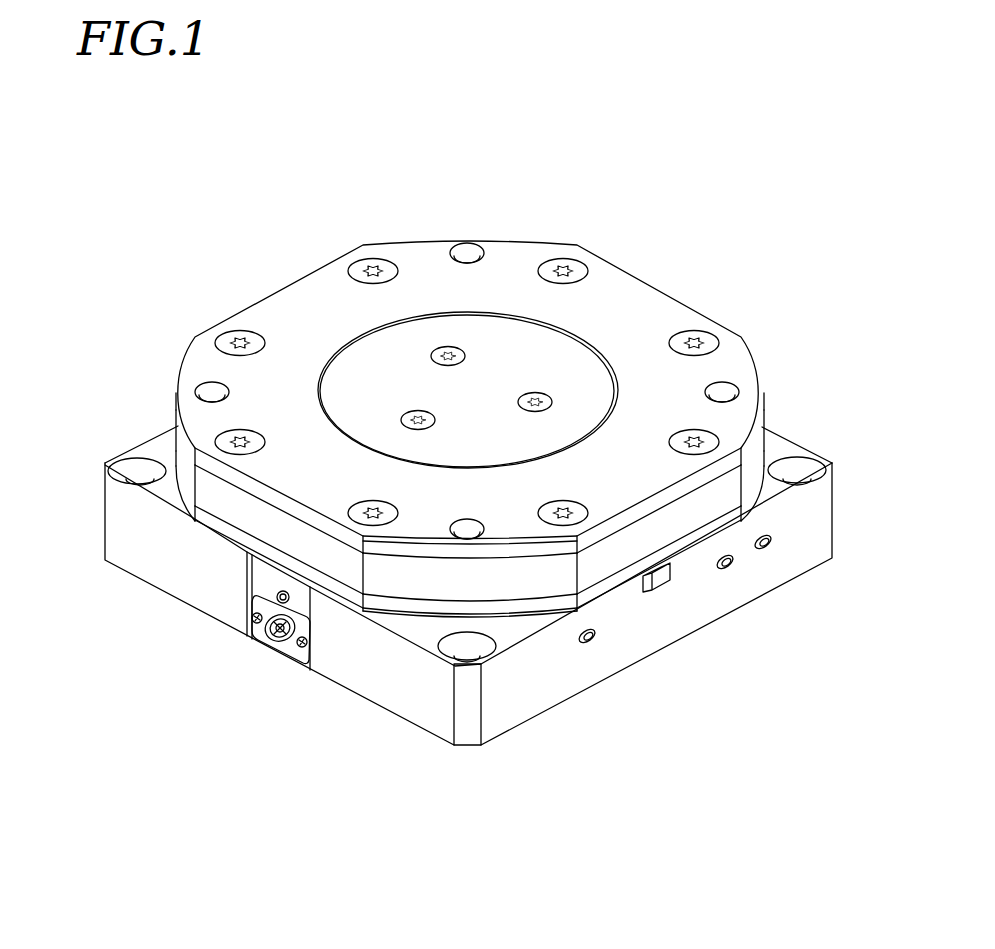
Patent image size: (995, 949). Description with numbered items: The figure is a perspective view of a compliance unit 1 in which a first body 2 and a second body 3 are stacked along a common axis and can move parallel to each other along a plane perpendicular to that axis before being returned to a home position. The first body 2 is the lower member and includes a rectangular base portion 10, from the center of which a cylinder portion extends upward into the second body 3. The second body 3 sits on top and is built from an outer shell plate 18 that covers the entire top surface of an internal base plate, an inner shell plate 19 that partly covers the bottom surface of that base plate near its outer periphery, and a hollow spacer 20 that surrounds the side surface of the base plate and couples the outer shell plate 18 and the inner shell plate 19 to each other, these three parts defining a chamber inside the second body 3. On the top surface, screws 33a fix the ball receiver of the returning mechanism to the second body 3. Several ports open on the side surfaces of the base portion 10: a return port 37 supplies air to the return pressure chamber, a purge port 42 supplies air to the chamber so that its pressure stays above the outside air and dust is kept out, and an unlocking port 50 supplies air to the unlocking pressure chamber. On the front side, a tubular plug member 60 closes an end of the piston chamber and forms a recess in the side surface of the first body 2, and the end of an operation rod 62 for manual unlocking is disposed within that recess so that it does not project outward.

The compliance unit 1 is at (758, 126).
The first body 2 is at (390, 720).
The second body 3 is at (693, 288).
The base portion 10 is at (523, 697).
The outer shell plate 18 is at (202, 365).
The inner shell plate 19 is at (237, 535).
The spacer 20 is at (228, 498).
The screws 33a is at (448, 348).
The return port 37 is at (732, 565).
The purge port 42 is at (770, 545).
The unlocking port 50 is at (592, 642).
The plug member 60 is at (288, 653).
The operation rod 62 is at (262, 633).